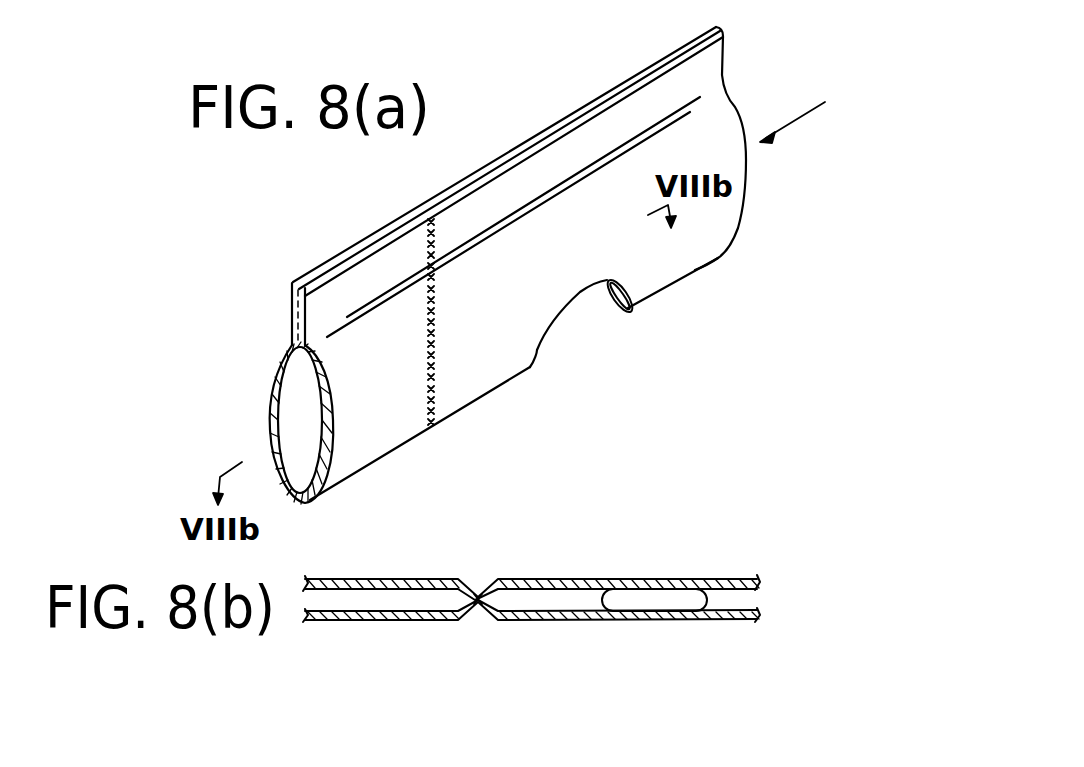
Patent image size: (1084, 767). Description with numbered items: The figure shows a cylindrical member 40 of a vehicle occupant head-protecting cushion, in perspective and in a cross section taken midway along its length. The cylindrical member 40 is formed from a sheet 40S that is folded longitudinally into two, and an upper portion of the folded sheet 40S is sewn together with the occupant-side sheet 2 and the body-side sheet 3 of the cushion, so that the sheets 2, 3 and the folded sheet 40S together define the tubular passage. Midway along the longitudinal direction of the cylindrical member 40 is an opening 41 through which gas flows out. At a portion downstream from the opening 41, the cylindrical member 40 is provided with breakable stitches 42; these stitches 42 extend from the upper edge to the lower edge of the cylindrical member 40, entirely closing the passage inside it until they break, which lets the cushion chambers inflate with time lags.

In FIG. 8B, the occupant-side sheet 2 is at (570, 620).
In FIG. 8B, the body-side sheet 3 is at (582, 575).
In FIG. 8A, the cylindrical member 40 is at (283, 327).
In FIG. 8A, the sheet 40S is at (360, 455).
In FIG. 8A, the opening 41 is at (613, 300).
In FIG. 8B, the opening 41 is at (655, 600).
In FIG. 8A, the stitches 42 is at (433, 373).
In FIG. 8B, the stitches 42 is at (480, 623).